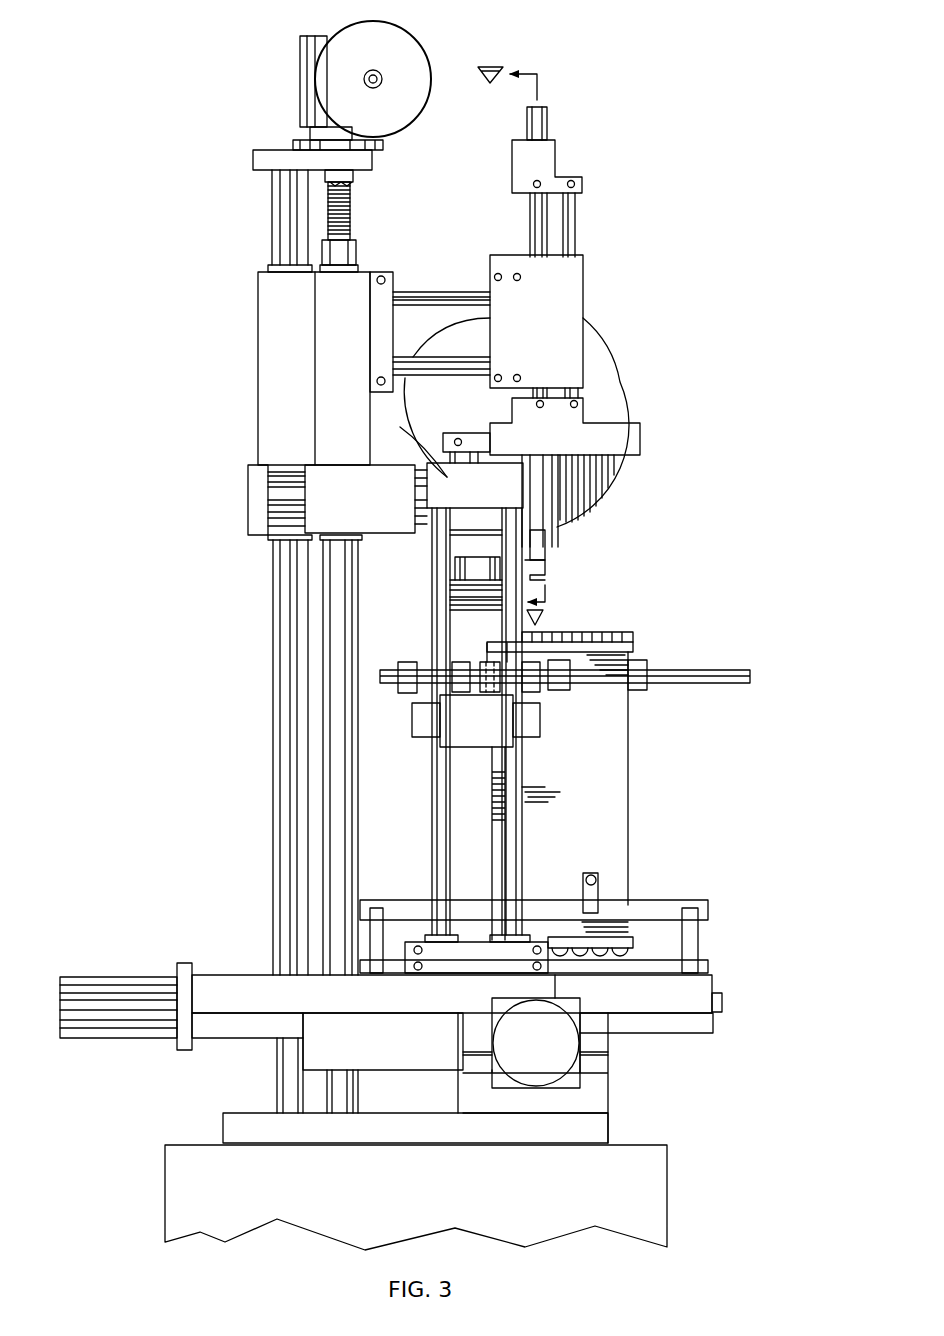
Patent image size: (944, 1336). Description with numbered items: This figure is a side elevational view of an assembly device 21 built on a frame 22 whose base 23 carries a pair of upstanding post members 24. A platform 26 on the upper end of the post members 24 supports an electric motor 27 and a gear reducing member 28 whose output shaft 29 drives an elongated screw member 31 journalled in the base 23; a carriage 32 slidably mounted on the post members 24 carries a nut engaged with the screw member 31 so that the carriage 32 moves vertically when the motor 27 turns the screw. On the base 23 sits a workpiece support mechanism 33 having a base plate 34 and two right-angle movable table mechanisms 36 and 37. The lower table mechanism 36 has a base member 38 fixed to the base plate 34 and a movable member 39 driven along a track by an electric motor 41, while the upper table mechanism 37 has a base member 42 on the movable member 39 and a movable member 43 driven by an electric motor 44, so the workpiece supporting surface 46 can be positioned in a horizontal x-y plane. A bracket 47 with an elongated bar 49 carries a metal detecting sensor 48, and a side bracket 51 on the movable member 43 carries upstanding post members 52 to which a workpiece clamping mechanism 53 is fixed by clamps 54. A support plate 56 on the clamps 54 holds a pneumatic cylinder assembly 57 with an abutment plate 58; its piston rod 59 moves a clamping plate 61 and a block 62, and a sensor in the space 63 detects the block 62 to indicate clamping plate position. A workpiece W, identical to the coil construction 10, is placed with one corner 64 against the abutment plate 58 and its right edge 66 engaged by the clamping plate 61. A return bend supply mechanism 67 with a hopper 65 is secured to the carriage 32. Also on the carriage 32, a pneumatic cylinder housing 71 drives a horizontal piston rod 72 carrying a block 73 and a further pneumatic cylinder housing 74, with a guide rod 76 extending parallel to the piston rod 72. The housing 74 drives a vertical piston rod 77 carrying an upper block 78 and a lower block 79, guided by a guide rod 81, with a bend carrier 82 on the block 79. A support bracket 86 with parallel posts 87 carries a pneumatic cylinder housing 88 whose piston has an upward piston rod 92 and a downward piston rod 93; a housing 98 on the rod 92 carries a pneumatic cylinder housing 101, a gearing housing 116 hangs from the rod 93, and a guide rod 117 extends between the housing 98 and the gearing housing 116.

The assembly device 21 is at (143, 207).
The frame 22 is at (670, 1185).
The base 23 is at (668, 1156).
The post members 24 is at (338, 665).
The platform 26 is at (275, 160).
The electric motor 27 is at (405, 58).
The gear reducing member 28 is at (305, 62).
The output shaft 29 is at (352, 175).
The screw member 31 is at (352, 222).
The carriage 32 is at (270, 360).
The workpiece support mechanism 33 is at (750, 970).
The base plate 34 is at (597, 1128).
The movable table mechanism 36 is at (610, 1058).
The movable table mechanism 37 is at (714, 972).
The base member 38 is at (597, 1097).
The movable member 39 is at (597, 1035).
The electric motor 41 is at (536, 1043).
The base member 42 is at (720, 1020).
The movable member 43 is at (714, 985).
The electric motor 44 is at (120, 1000).
The workpiece supporting surface 46 is at (665, 958).
The bracket 47 is at (675, 897).
The metal detecting sensor 48 is at (600, 878).
The bar 49 is at (695, 910).
The side bracket 51 is at (440, 965).
The post members 52 is at (440, 820).
The workpiece clamping mechanism 53 is at (425, 748).
The clamps 54 is at (415, 720).
The support plate 56 is at (525, 692).
The pneumatic cylinder assembly 57 is at (537, 668).
The abutment plate 58 is at (485, 660).
The piston rod 59 is at (670, 672).
The clamping plate 61 is at (640, 662).
The block 62 is at (460, 668).
The space 63 is at (475, 698).
The corner 64 is at (495, 765).
The hopper 65 is at (600, 350).
The right edge 66 is at (630, 778).
The return bend supply mechanism 67 is at (608, 367).
The pneumatic cylinder housing 71 is at (345, 490).
The piston rod 72 is at (293, 512).
The block 73 is at (255, 492).
The pneumatic cylinder housing 74 is at (411, 442).
The guide rod 76 is at (290, 475).
The piston rod 77 is at (490, 572).
The block 78 is at (466, 438).
The block 79 is at (455, 588).
The guide rod 81 is at (469, 493).
The bend carrier 82 is at (455, 602).
The support bracket 86 is at (393, 285).
The posts 87 is at (438, 362).
The pneumatic cylinder housing 88 is at (580, 287).
The piston rod 92 is at (530, 225).
The piston rod 93 is at (535, 395).
The housing 98 is at (558, 152).
The pneumatic cylinder housing 101 is at (545, 120).
The gearing housing 116 is at (643, 430).
The guide rod 117 is at (572, 228).
The coil construction 10 is at (628, 736).